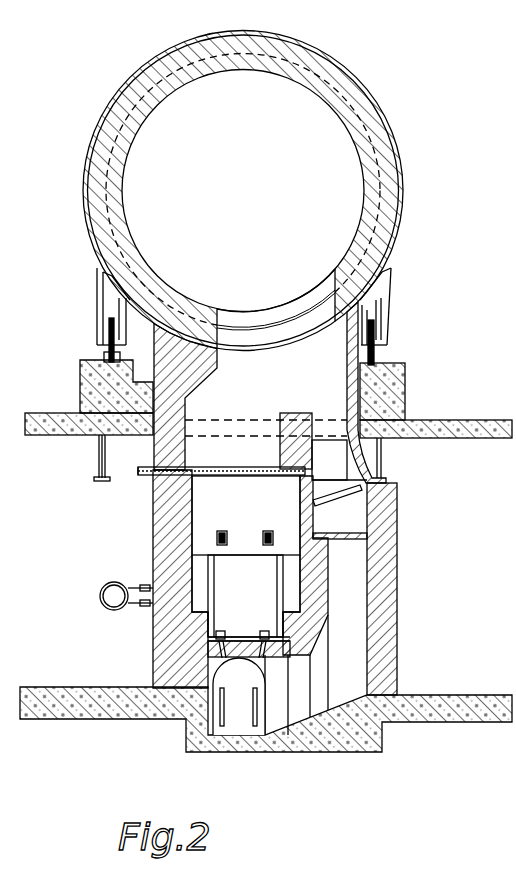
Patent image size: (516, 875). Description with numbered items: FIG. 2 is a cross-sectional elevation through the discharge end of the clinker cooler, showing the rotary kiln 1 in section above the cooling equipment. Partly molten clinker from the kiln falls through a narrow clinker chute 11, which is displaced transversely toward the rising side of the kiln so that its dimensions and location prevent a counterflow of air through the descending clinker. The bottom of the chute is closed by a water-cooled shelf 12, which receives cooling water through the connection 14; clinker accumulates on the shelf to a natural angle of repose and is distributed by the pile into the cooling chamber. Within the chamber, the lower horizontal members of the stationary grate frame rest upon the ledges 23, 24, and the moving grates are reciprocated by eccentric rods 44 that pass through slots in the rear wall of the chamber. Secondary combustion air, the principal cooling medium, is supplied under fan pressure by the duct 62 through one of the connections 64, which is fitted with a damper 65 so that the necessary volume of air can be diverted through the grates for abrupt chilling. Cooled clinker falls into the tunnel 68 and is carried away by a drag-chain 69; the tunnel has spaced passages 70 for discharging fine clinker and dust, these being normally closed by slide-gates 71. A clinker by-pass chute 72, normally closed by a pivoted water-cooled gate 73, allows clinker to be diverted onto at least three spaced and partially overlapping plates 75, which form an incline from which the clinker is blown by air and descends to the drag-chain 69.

The rotary kiln 1 is at (128, 156).
The clinker chute 11 is at (268, 375).
The water-cooled shelf 12 is at (246, 467).
The connection 14 is at (137, 474).
The ledge 23 is at (217, 612).
The ledge 24 is at (291, 614).
The eccentric rods 44 is at (266, 533).
The duct 62 is at (100, 596).
The connection 64 is at (143, 586).
The damper 65 is at (143, 606).
The tunnel 68 is at (220, 680).
The drag-chain 69 is at (253, 722).
The passages 70 is at (249, 656).
The slide-gates 71 is at (260, 632).
The clinker by-pass chute 72 is at (329, 460).
The pivoted water-cooled gate 73 is at (356, 492).
The plates 75 is at (335, 538).